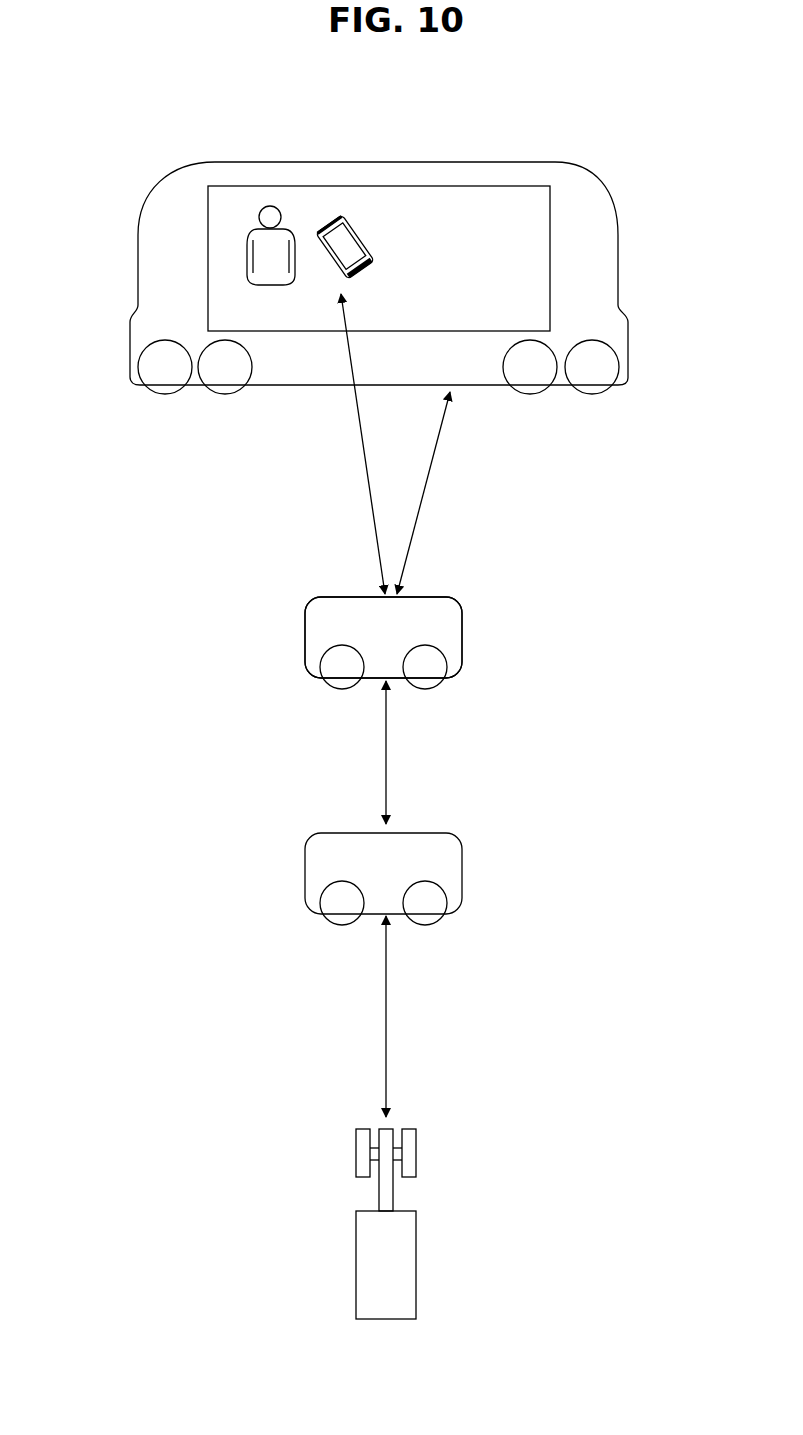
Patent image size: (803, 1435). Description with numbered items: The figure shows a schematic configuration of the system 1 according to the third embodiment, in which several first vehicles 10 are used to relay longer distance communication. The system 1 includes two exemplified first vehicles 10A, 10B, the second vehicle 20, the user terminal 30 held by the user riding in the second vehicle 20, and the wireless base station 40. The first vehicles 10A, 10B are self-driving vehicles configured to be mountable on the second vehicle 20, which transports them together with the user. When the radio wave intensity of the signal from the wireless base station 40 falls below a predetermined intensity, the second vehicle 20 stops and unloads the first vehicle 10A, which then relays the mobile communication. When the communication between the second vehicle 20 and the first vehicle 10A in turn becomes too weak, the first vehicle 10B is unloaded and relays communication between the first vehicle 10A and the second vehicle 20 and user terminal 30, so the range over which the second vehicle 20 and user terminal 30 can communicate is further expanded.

The system 1 is at (130, 188).
The second vehicle 20 is at (379, 162).
The user terminal 30 is at (342, 246).
The first vehicle 10 is at (383, 637).
The first vehicle 10A is at (462, 872).
The first vehicle 10B is at (462, 640).
The wireless base station 40 is at (416, 1262).